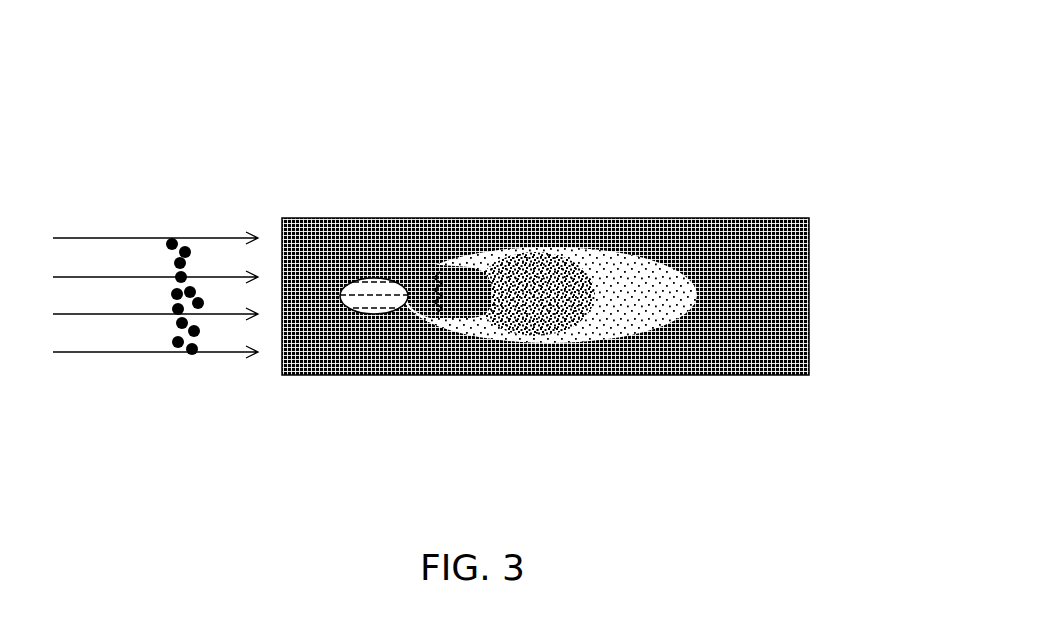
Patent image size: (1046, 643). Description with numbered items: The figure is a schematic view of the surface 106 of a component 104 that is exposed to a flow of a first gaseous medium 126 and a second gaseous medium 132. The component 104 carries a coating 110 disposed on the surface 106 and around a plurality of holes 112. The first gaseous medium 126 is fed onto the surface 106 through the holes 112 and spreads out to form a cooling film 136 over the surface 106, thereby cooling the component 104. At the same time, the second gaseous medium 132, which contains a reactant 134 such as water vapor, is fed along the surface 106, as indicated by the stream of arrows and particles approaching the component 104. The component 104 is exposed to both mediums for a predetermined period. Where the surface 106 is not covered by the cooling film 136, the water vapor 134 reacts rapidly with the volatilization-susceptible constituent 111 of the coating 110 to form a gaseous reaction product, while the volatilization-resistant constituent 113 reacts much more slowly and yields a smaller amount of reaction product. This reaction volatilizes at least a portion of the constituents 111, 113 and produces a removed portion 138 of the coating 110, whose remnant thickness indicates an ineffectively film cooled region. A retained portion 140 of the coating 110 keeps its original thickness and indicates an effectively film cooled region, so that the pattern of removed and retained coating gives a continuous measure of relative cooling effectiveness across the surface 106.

The component 104 is at (767, 67).
The surface 106 is at (740, 228).
The coating 110 is at (468, 302).
The volatilization-susceptible constituent 111 is at (457, 302).
The volatilization-resistant constituent 113 is at (457, 370).
The plurality of holes 112 is at (345, 307).
The first gaseous medium 126 is at (403, 295).
The second gaseous medium 132 is at (100, 277).
The reactant 134 is at (185, 243).
The cooling film 136 is at (595, 295).
The removed portion 138 is at (624, 324).
The retained portion 140 is at (529, 317).